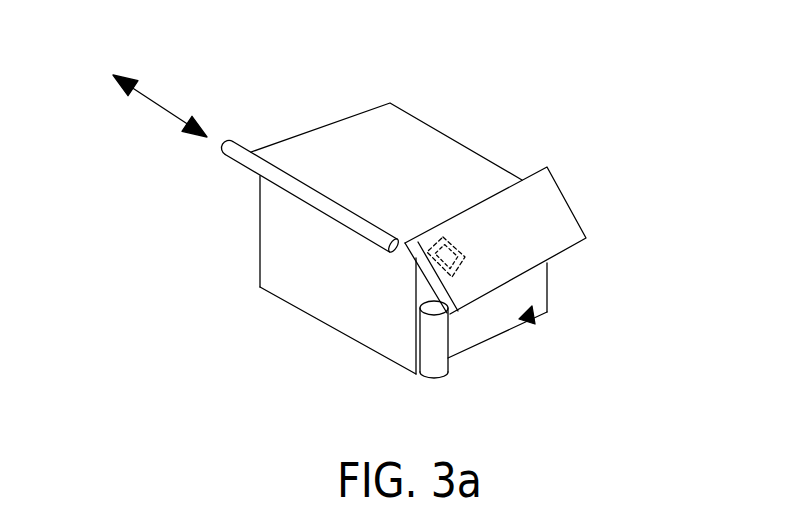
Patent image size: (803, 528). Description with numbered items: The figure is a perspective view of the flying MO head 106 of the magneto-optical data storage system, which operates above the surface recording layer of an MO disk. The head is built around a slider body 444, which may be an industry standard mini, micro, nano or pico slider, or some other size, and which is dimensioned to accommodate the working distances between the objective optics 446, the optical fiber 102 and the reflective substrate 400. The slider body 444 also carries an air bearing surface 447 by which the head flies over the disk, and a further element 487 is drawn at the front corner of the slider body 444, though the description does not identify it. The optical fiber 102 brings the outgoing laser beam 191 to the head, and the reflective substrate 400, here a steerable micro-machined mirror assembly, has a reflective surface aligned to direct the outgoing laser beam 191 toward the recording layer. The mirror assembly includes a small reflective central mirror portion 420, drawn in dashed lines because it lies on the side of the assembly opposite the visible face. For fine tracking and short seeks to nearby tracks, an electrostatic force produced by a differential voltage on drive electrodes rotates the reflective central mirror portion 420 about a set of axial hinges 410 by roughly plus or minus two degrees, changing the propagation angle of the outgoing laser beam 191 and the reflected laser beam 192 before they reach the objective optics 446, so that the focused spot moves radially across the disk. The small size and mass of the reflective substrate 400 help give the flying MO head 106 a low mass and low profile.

The optical fiber 102 is at (243, 153).
The flying MO head 106 is at (421, 188).
The outgoing laser beam 191 is at (128, 159).
The reflected laser beam 192 is at (160, 85).
The reflective substrate 400 is at (558, 181).
The axial hinges 410 is at (458, 240).
The reflective central mirror portion 420 is at (410, 268).
The slider body 444 is at (307, 248).
The objective optics 446 is at (427, 342).
The air bearing surface 447 is at (540, 318).
The cylindrical post 487 is at (487, 345).